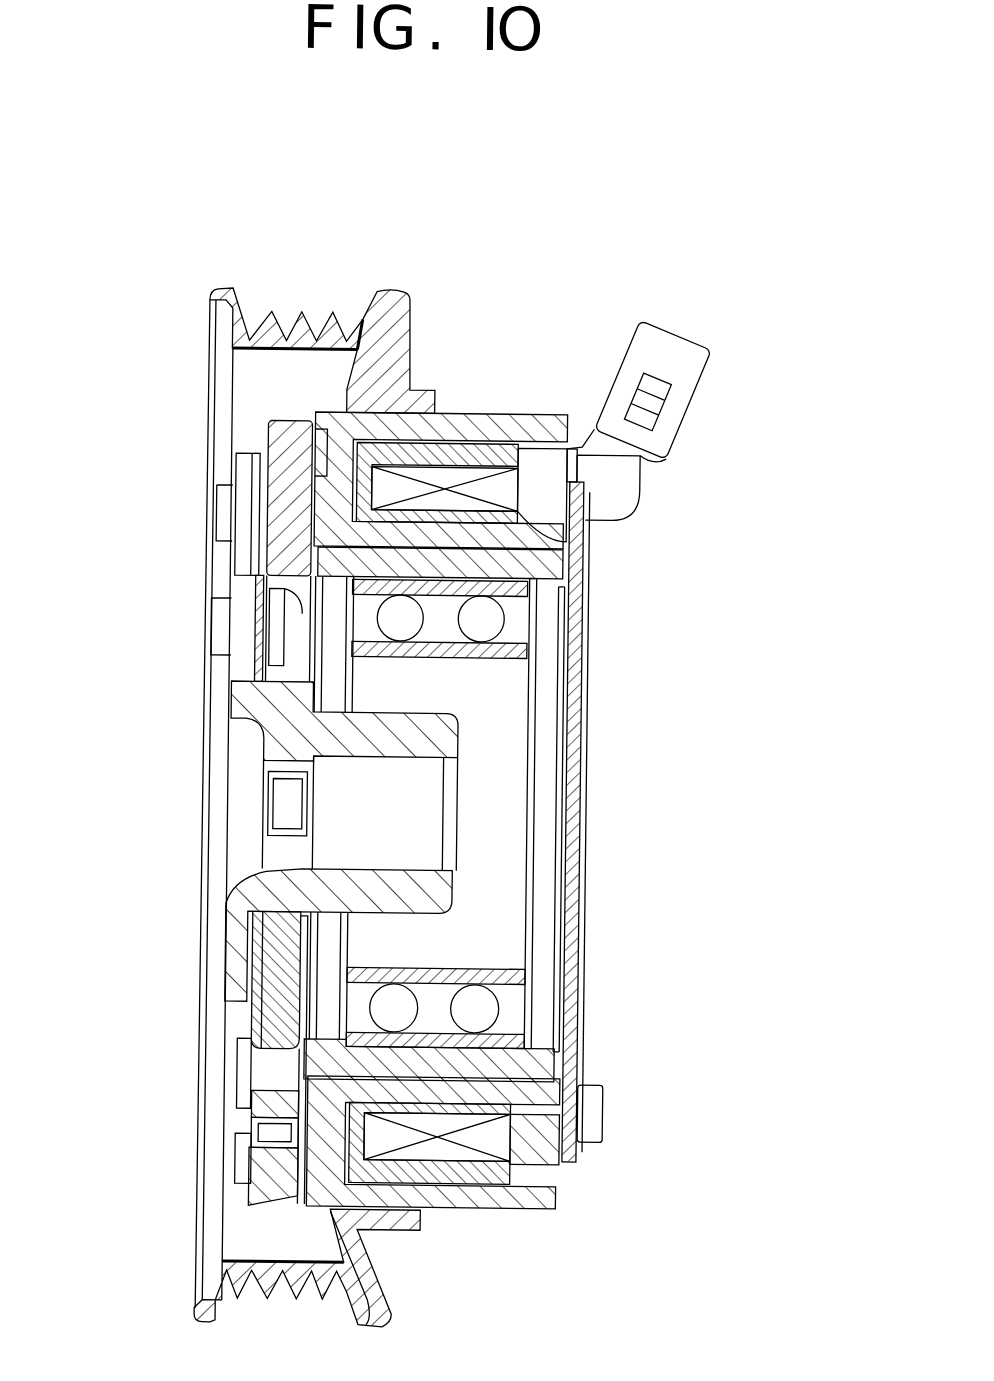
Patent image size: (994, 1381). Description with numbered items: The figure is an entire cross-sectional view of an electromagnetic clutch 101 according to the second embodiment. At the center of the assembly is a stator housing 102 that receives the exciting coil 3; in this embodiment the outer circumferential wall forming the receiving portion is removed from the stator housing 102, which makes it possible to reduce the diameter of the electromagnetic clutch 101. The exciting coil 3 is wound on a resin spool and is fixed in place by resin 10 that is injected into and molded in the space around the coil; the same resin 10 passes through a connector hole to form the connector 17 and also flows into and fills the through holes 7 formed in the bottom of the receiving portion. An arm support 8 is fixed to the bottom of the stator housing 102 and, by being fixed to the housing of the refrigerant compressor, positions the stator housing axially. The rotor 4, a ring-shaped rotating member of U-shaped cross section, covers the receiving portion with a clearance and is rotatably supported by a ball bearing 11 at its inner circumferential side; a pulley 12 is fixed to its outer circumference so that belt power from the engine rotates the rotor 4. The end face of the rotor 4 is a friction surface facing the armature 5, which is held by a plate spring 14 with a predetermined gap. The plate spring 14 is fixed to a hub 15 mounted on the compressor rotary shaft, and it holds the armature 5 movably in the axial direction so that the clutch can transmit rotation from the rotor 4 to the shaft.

The electromagnetic clutch 101 is at (473, 239).
The pulley 12 is at (227, 292).
The armature 5 is at (258, 434).
The rotor 4 is at (517, 427).
The exciting coil 3 is at (496, 487).
The connector 17 is at (683, 369).
The arm support 8 is at (577, 578).
The stator housing 102 is at (578, 1076).
The resin 10 is at (458, 444).
The ball bearing 11 is at (486, 622).
The hub 15 is at (244, 905).
The plate spring 14 is at (259, 1015).
The through holes 7 is at (584, 1143).